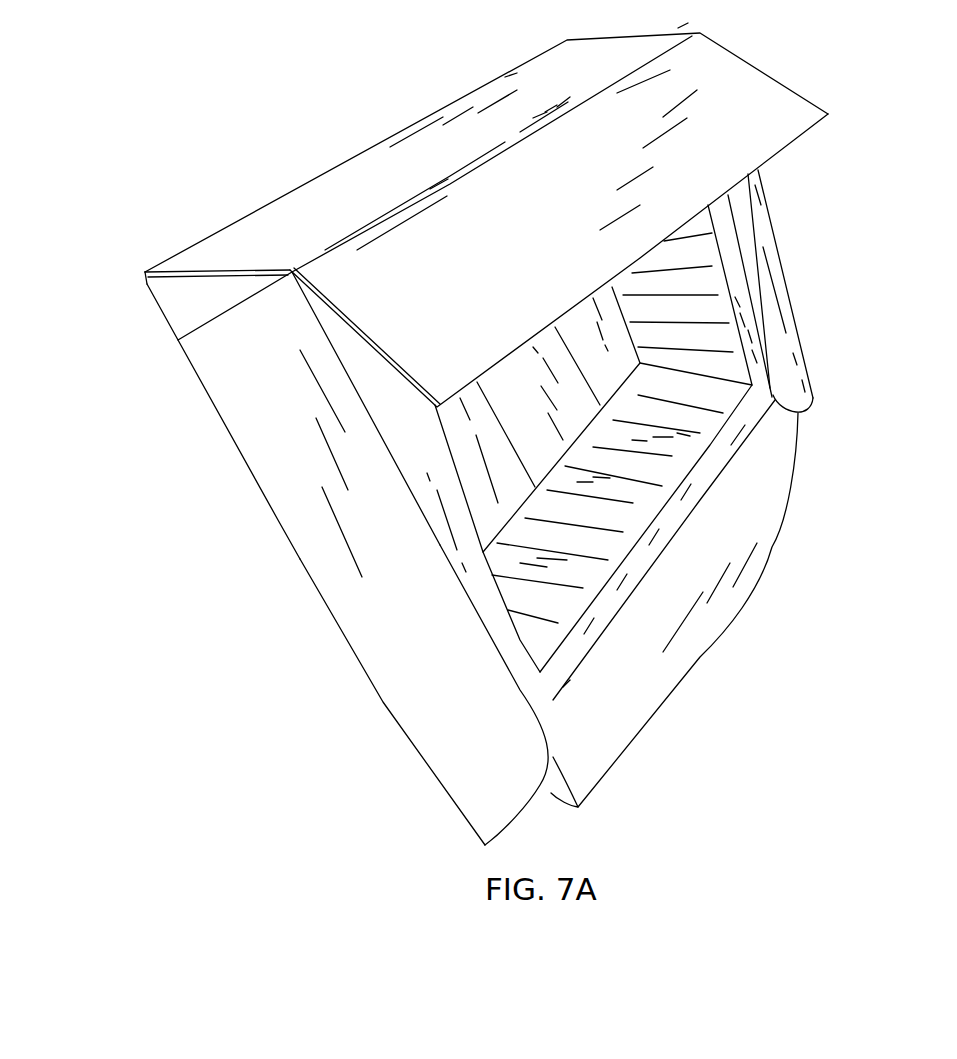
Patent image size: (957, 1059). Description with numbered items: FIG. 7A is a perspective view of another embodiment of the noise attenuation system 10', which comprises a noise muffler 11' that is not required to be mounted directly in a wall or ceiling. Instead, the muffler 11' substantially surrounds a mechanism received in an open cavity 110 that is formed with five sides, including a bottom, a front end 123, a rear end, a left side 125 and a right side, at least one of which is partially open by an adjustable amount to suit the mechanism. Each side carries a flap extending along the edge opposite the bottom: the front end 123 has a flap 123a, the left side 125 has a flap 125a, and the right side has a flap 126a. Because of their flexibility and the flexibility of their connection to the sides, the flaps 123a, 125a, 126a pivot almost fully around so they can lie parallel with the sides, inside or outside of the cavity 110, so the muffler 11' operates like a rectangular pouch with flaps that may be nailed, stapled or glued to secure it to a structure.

The noise attenuation system 10' is at (483, 434).
The noise muffler 11' is at (161, 306).
The open cavity 110 is at (787, 344).
The front end 123 is at (233, 415).
The flap of front end 123a is at (413, 704).
The left side 125 is at (287, 222).
The flap of left side 125a is at (589, 220).
The flap of right side 126a is at (620, 712).